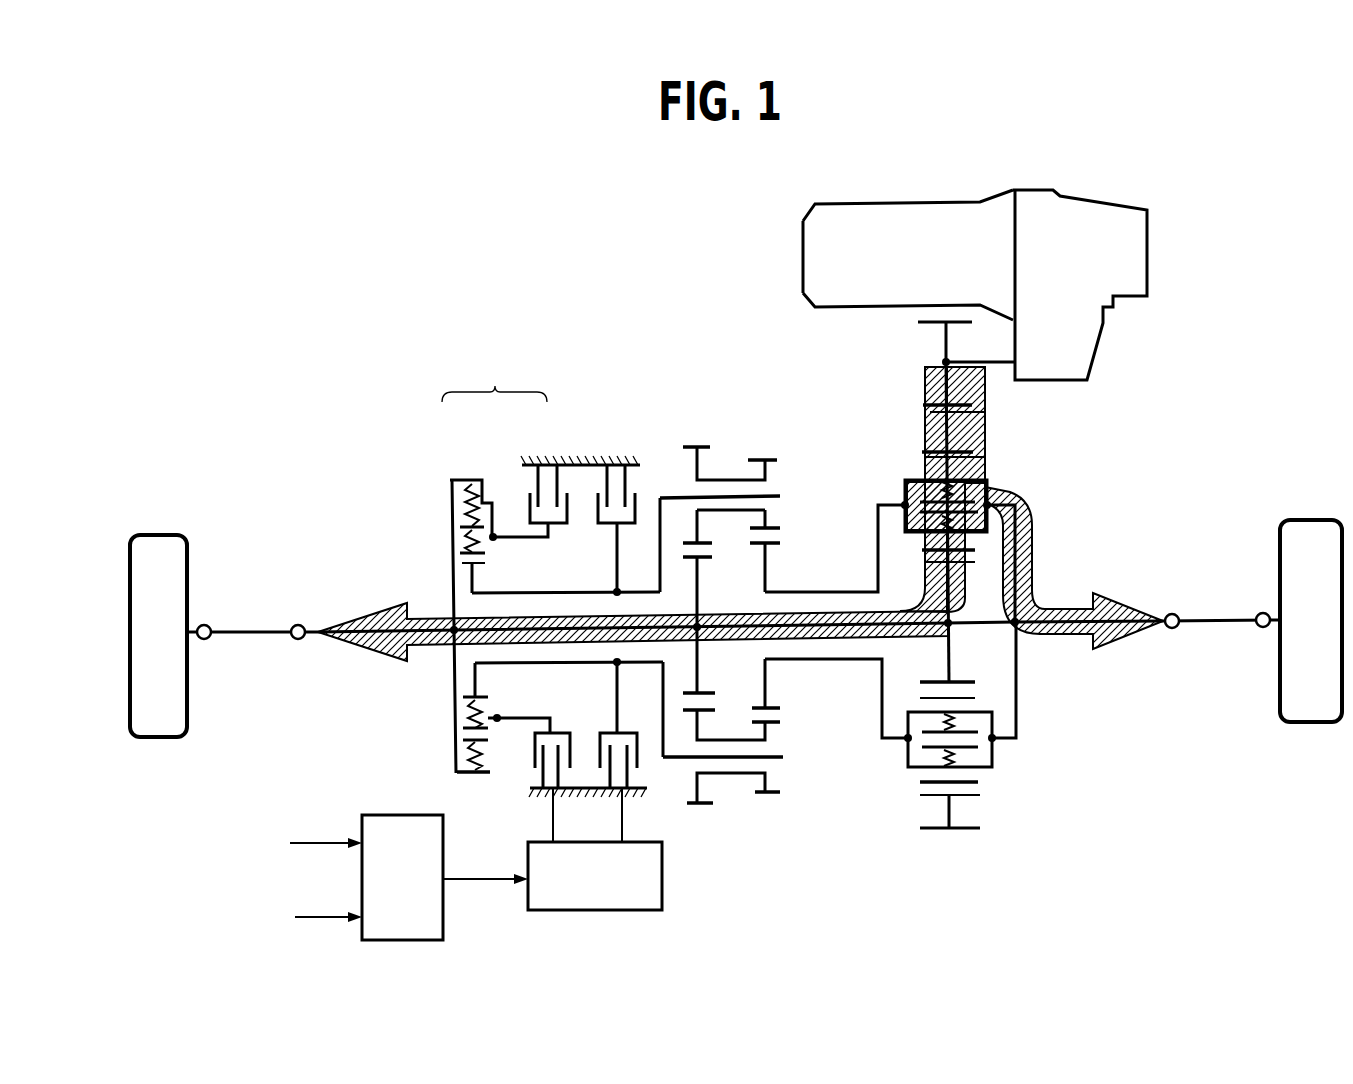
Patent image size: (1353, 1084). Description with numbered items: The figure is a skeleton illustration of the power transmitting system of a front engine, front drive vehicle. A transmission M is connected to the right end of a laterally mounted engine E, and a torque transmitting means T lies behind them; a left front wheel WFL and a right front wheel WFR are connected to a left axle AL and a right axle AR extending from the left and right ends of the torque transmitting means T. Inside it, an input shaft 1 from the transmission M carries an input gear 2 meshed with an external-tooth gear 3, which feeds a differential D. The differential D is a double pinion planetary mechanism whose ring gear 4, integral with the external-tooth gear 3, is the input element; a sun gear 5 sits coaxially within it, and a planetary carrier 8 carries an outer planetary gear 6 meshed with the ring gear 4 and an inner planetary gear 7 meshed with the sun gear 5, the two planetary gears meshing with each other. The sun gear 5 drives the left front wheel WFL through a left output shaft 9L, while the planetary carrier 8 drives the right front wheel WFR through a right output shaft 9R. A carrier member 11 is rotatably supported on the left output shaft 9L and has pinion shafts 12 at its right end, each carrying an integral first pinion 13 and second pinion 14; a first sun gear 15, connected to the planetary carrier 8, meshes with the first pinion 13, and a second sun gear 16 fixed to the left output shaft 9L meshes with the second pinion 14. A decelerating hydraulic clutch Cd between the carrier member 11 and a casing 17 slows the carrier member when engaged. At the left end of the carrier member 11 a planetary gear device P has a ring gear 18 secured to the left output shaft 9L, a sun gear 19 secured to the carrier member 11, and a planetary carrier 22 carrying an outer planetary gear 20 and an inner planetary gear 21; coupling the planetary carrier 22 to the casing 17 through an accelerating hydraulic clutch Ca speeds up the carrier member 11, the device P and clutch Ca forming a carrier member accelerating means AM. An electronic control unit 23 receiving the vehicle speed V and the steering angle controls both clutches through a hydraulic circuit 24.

The input shaft 1 is at (1006, 363).
The input gear 2 is at (926, 327).
The external-tooth gear 3 is at (925, 408).
The ring gear 4 is at (925, 452).
The sun gear 5 is at (970, 570).
The outer planetary gear 6 is at (922, 470).
The inner planetary gear 7 is at (925, 555).
The planetary carrier 8 is at (877, 520).
The left output shaft 9L is at (752, 616).
The right output shaft 9R is at (1068, 609).
The carrier member 11 is at (579, 592).
The pinion shafts 12 is at (782, 497).
The first pinion 13 is at (774, 460).
The second pinion 14 is at (703, 447).
The first sun gear 15 is at (782, 547).
The second sun gear 16 is at (706, 692).
The casing 17 is at (628, 458).
The ring gear 18 is at (477, 775).
The sun gear 19 is at (483, 697).
The outer planetary gear 20 is at (457, 497).
The inner planetary gear 21 is at (460, 548).
The planetary carrier 22 is at (541, 540).
The electronic control unit 23 is at (393, 894).
The hydraulic circuit 24 is at (585, 892).
The engine E is at (921, 216).
The transmission M is at (1085, 213).
The differential D is at (1028, 476).
The torque transmitting means T is at (631, 335).
The planetary gear device P is at (466, 472).
The accelerating hydraulic clutch Ca is at (544, 450).
The decelerating hydraulic clutch Cd is at (611, 450).
The carrier member accelerating means AM is at (494, 380).
The vehicle speed V is at (326, 831).
The left front wheel WFL is at (157, 540).
The right front wheel WFR is at (1295, 533).
The left axle AL is at (259, 628).
The right axle AR is at (1213, 620).